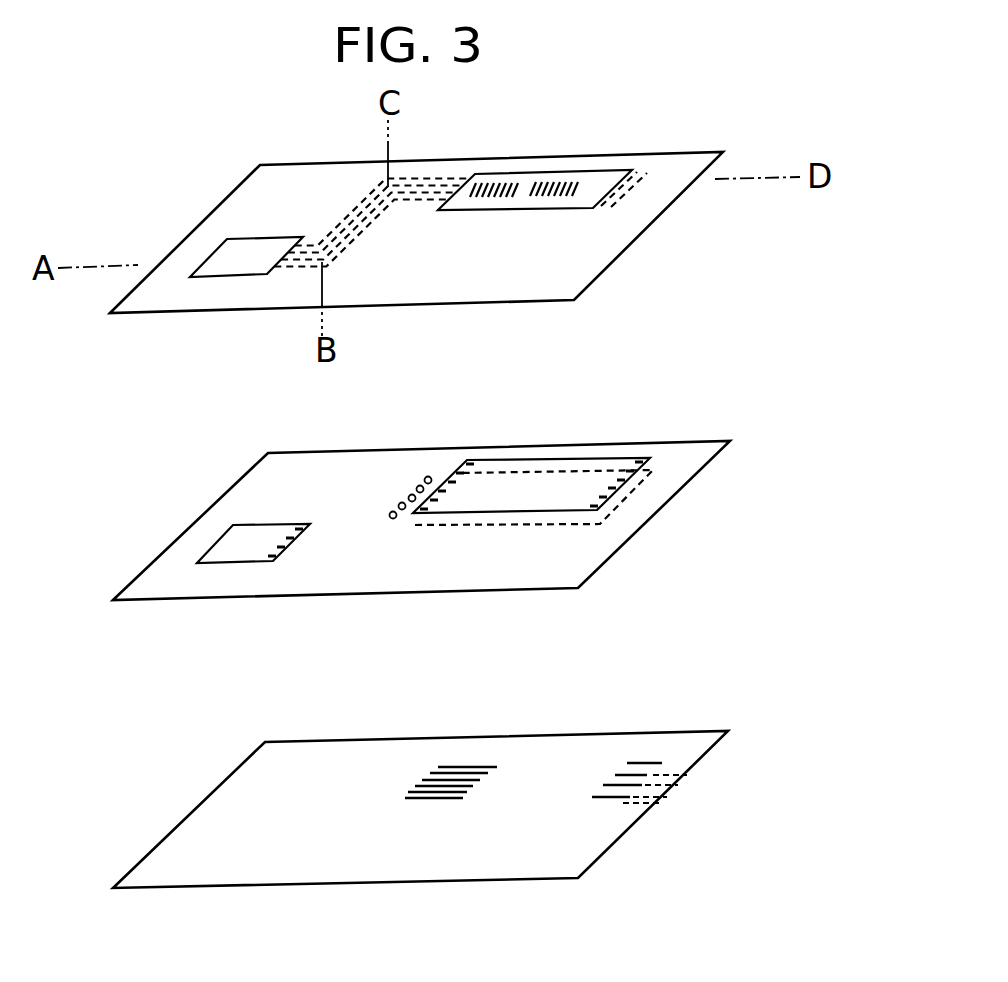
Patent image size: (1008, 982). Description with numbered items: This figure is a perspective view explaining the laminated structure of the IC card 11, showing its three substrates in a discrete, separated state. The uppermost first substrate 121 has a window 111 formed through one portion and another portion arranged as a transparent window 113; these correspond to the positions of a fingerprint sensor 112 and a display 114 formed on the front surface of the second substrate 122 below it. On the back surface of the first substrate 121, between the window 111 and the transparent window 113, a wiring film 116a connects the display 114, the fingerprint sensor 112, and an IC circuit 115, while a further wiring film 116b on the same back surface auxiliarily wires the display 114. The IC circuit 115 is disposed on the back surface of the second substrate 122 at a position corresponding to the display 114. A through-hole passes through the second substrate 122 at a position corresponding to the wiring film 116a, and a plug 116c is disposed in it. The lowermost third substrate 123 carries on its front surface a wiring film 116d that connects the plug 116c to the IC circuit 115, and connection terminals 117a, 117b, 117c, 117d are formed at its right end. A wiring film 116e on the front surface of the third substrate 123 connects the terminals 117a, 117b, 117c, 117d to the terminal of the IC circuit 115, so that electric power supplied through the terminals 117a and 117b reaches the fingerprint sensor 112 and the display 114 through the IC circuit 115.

The IC card 11 is at (390, 977).
The window 111 is at (214, 256).
The fingerprint sensor 112 is at (233, 542).
The transparent window 113 is at (594, 178).
The display 114 is at (598, 468).
The IC circuit 115 is at (663, 496).
The wiring film 116a is at (400, 187).
The wiring film 116b is at (620, 180).
The plug 116c is at (427, 473).
The wiring film 116d is at (467, 767).
The wiring film 116e is at (648, 763).
The connection terminal 117a is at (685, 772).
The connection terminal 117b is at (680, 783).
The connection terminal 117c is at (670, 792).
The connection terminal 117d is at (660, 803).
The first substrate 121 is at (653, 223).
The second substrate 122 is at (637, 540).
The third substrate 123 is at (597, 862).